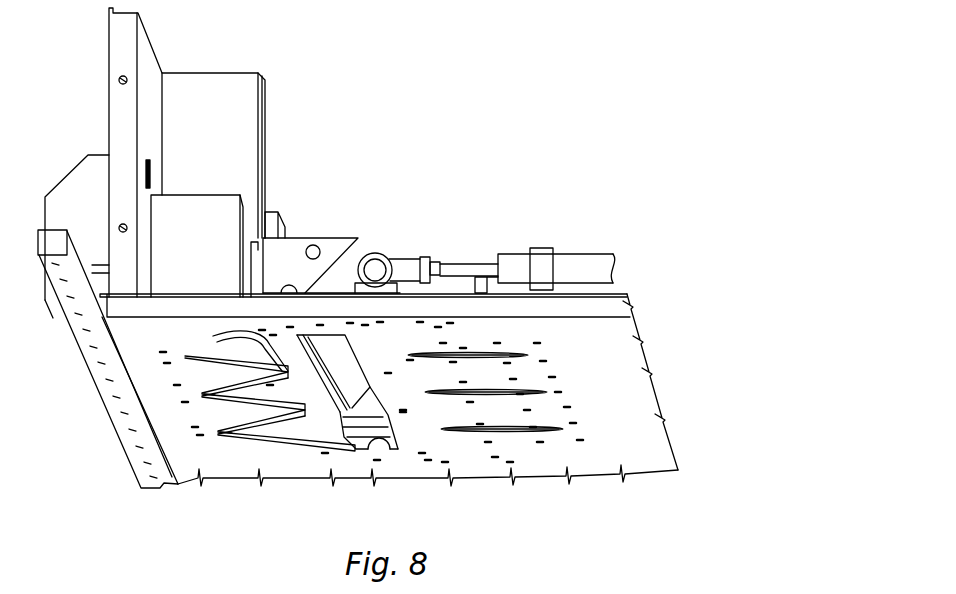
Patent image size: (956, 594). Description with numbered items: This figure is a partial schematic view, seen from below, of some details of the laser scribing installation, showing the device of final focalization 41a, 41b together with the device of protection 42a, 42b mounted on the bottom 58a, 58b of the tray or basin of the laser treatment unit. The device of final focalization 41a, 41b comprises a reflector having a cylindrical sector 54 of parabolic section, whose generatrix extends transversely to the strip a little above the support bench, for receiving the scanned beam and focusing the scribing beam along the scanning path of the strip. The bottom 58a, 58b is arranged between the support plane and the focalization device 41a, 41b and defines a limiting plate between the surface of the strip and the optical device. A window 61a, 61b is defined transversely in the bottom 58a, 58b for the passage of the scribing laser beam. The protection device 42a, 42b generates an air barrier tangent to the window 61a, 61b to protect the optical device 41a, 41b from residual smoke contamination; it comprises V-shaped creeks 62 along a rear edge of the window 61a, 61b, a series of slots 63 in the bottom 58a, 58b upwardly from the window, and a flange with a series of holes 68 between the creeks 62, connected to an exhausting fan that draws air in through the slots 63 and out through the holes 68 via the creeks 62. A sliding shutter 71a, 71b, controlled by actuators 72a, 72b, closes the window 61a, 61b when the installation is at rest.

The chain tensioner assembly 41a, 41b is at (403, 194).
The cylindrical sector 54 is at (335, 247).
The pivot nut and shaft 71a, 71b is at (452, 290).
The cylinder rod 72a, 72b is at (583, 262).
The deck plate 42a, 42b is at (424, 489).
The deck edge 58a, 58b is at (648, 454).
The "V" shaped creeks 62 is at (237, 363).
The holes 68 is at (208, 396).
The wedge guide 61a, 61b is at (372, 442).
The slots 63 is at (472, 391).